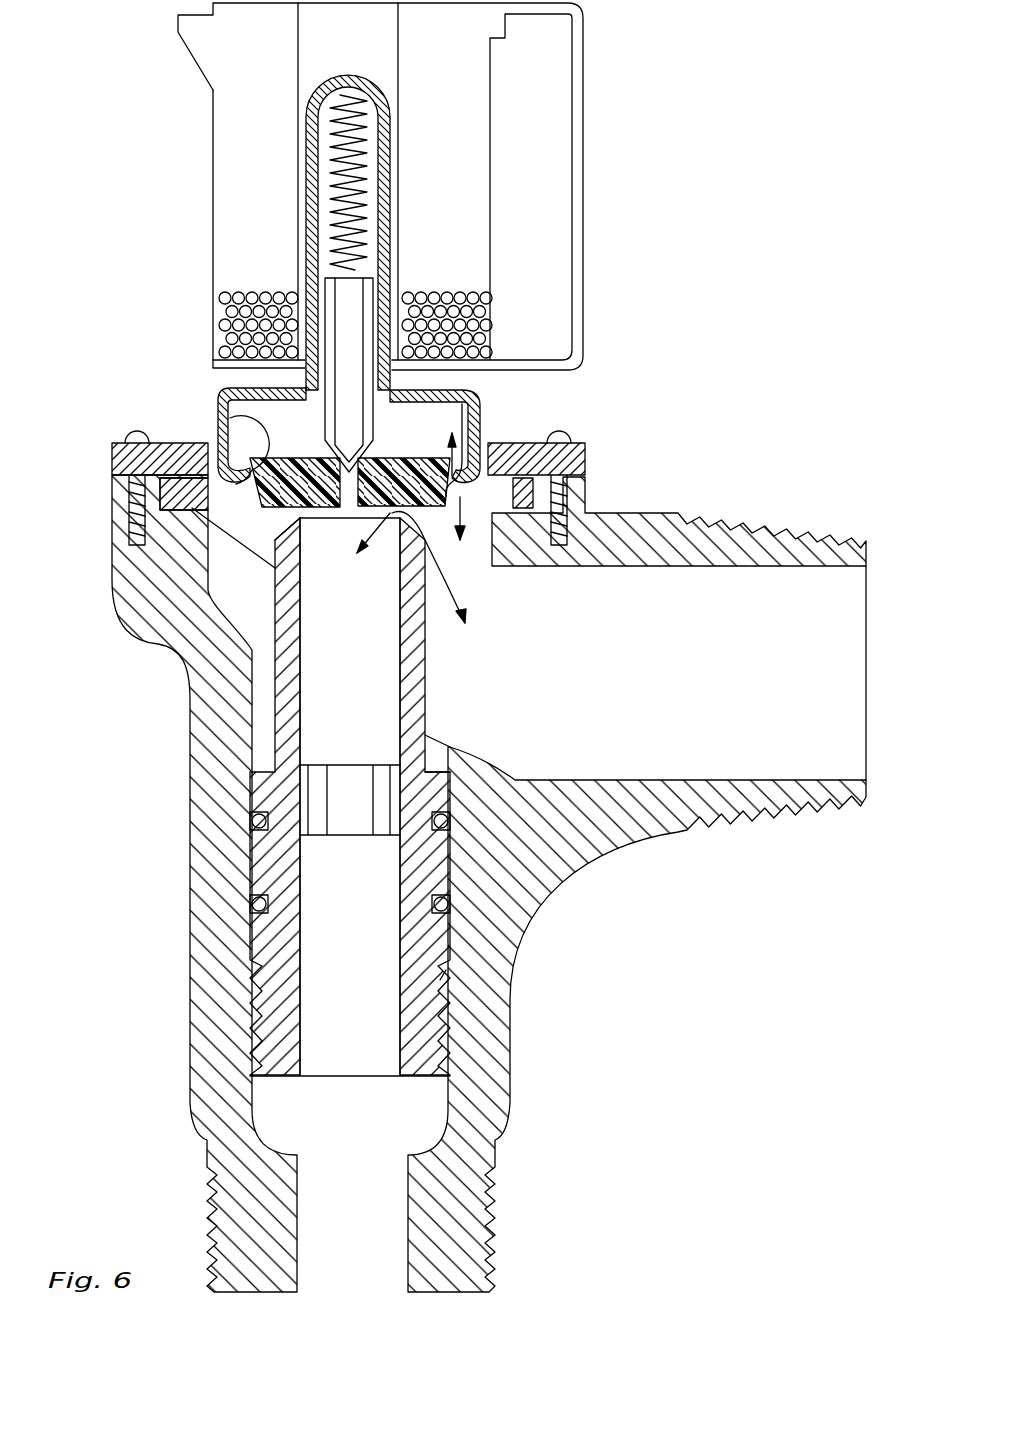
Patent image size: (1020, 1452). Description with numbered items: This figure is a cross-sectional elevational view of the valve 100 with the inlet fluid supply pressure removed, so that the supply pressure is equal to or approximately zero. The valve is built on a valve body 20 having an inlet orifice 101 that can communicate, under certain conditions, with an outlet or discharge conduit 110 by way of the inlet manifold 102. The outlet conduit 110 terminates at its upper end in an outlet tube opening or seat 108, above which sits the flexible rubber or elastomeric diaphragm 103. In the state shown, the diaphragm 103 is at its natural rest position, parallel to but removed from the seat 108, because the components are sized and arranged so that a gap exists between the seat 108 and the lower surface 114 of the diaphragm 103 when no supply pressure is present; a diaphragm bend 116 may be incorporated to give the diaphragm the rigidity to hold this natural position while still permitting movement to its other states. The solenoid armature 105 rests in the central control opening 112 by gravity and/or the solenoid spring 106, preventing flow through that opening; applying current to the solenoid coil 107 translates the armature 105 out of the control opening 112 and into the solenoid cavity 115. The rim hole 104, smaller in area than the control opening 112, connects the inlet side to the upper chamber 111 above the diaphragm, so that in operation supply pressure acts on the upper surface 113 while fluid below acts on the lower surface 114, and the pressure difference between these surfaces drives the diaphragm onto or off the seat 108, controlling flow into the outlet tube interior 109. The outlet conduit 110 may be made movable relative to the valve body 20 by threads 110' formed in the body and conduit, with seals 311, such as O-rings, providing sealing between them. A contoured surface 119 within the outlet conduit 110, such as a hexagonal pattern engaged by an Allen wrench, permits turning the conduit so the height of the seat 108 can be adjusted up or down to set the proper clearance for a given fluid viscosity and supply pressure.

The valve body 20 is at (190, 884).
The solenoid valve 100 is at (715, 293).
The inlet orifice 101 is at (826, 590).
The inlet manifold 102 is at (218, 528).
The diaphragm 103 is at (248, 448).
The rim hole 104 is at (474, 398).
The solenoid armature 105 is at (325, 290).
The solenoid spring 106 is at (330, 140).
The solenoid coil 107 is at (218, 203).
The outlet tube opening 108 is at (296, 520).
The outlet tube interior 109 is at (372, 694).
The outlet conduit 110 is at (267, 797).
The threads 110' is at (513, 1005).
The upper chamber 111 is at (230, 370).
The control opening 112 is at (348, 505).
The upper surface 113 is at (380, 457).
The lower surface 114 is at (683, 673).
The solenoid cavity 115 is at (306, 258).
The diaphragm bend 116 is at (482, 432).
The contoured surface 119 is at (335, 840).
The seals 311 is at (455, 822).